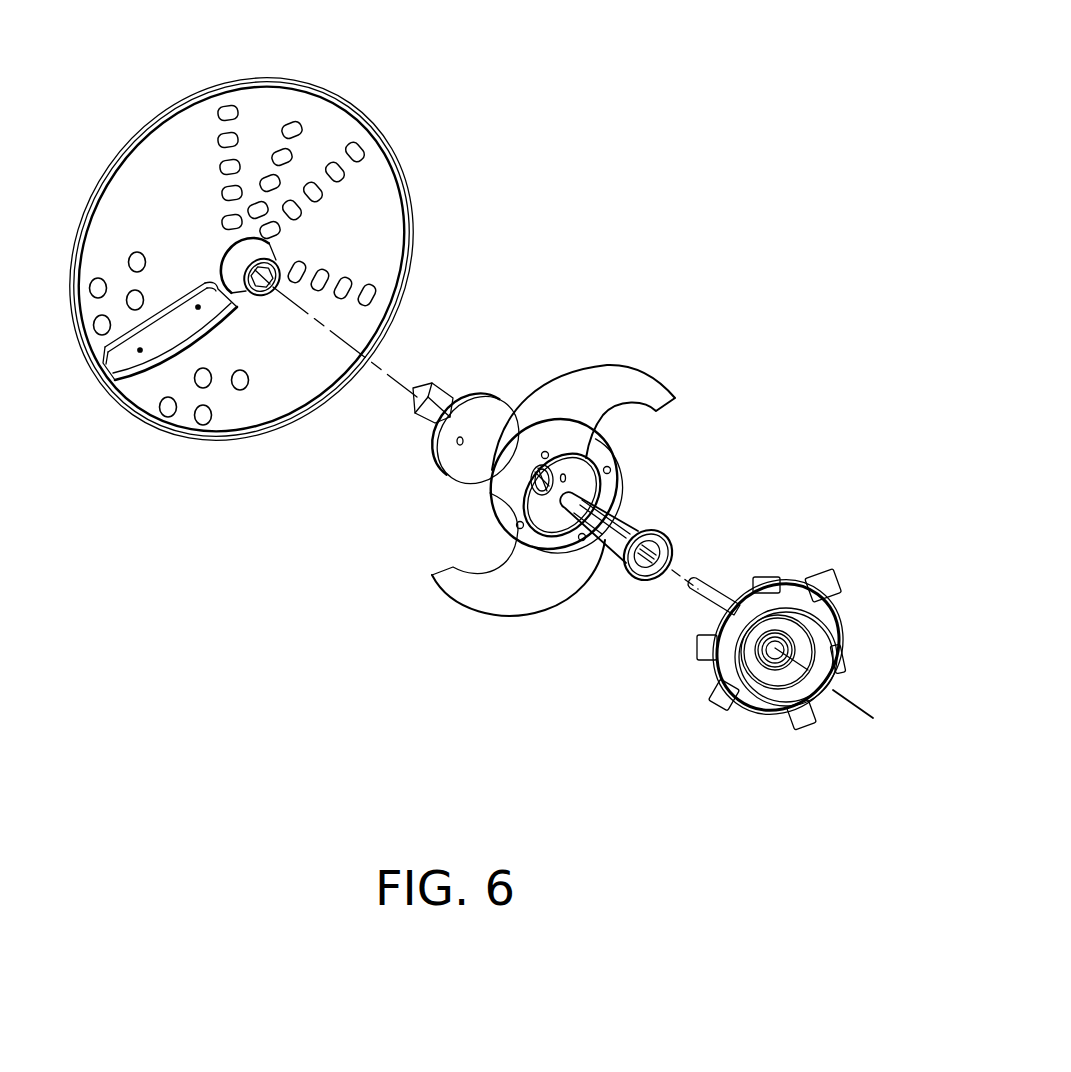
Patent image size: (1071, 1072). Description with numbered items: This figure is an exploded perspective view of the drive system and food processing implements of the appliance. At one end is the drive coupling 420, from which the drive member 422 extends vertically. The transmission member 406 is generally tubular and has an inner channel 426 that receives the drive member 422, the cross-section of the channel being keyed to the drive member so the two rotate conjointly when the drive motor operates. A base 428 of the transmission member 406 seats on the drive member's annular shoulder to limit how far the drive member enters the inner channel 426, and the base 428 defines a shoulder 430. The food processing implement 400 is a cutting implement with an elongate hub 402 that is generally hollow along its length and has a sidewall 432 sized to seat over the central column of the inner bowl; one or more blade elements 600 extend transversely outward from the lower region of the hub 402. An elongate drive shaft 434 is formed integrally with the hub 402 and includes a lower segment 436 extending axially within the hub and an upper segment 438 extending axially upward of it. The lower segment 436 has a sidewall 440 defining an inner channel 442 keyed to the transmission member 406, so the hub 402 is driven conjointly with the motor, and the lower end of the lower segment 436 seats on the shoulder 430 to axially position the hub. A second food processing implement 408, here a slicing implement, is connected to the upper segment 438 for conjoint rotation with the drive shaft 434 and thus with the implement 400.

The food processing implement 400 is at (619, 501).
The elongate hub 402 is at (477, 412).
The transmission member 406 is at (603, 512).
The second food processing implement 408 is at (290, 107).
The drive coupling 420 is at (827, 633).
The drive member 422 is at (712, 587).
The inner channel 426 is at (670, 530).
The base 428 is at (645, 578).
The shoulder 430 is at (650, 523).
The sidewall 432 is at (460, 455).
The drive shaft 434 is at (550, 490).
The lower segment 436 is at (590, 442).
The upper segment 438 is at (423, 388).
The sidewall 440 is at (550, 490).
The inner channel 442 is at (490, 515).
The blade elements 600 is at (668, 400).